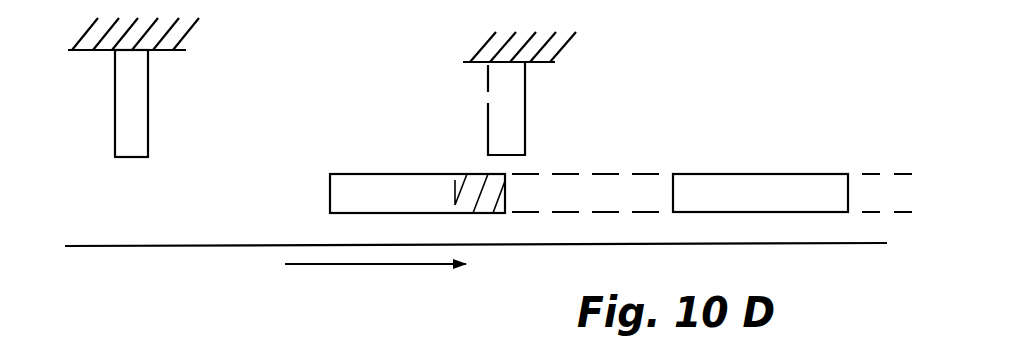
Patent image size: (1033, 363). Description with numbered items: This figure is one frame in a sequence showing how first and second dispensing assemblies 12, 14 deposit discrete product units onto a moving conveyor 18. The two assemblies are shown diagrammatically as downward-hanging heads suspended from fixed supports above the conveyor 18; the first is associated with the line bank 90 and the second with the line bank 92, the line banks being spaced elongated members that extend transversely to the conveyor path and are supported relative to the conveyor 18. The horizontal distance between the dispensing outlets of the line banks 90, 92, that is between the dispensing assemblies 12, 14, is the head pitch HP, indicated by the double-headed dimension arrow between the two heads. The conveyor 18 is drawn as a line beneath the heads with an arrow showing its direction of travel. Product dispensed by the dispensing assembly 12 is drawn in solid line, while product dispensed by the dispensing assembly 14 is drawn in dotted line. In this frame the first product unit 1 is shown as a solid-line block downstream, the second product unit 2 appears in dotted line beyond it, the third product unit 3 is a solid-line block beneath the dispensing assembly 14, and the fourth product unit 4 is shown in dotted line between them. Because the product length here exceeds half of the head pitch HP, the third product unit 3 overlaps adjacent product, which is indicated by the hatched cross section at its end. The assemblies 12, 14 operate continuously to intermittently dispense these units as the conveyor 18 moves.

The first product unit 1 is at (800, 172).
The second product unit 2 is at (873, 170).
The third product unit 3 is at (383, 173).
The fourth product unit 4 is at (617, 165).
The first dispensing assembly 12 is at (148, 87).
The second dispensing assembly 14 is at (552, 93).
The conveyor system 18 is at (118, 246).
The first line bank 90 is at (115, 86).
The second line bank 92 is at (527, 130).
The head pitch HP is at (486, 115).